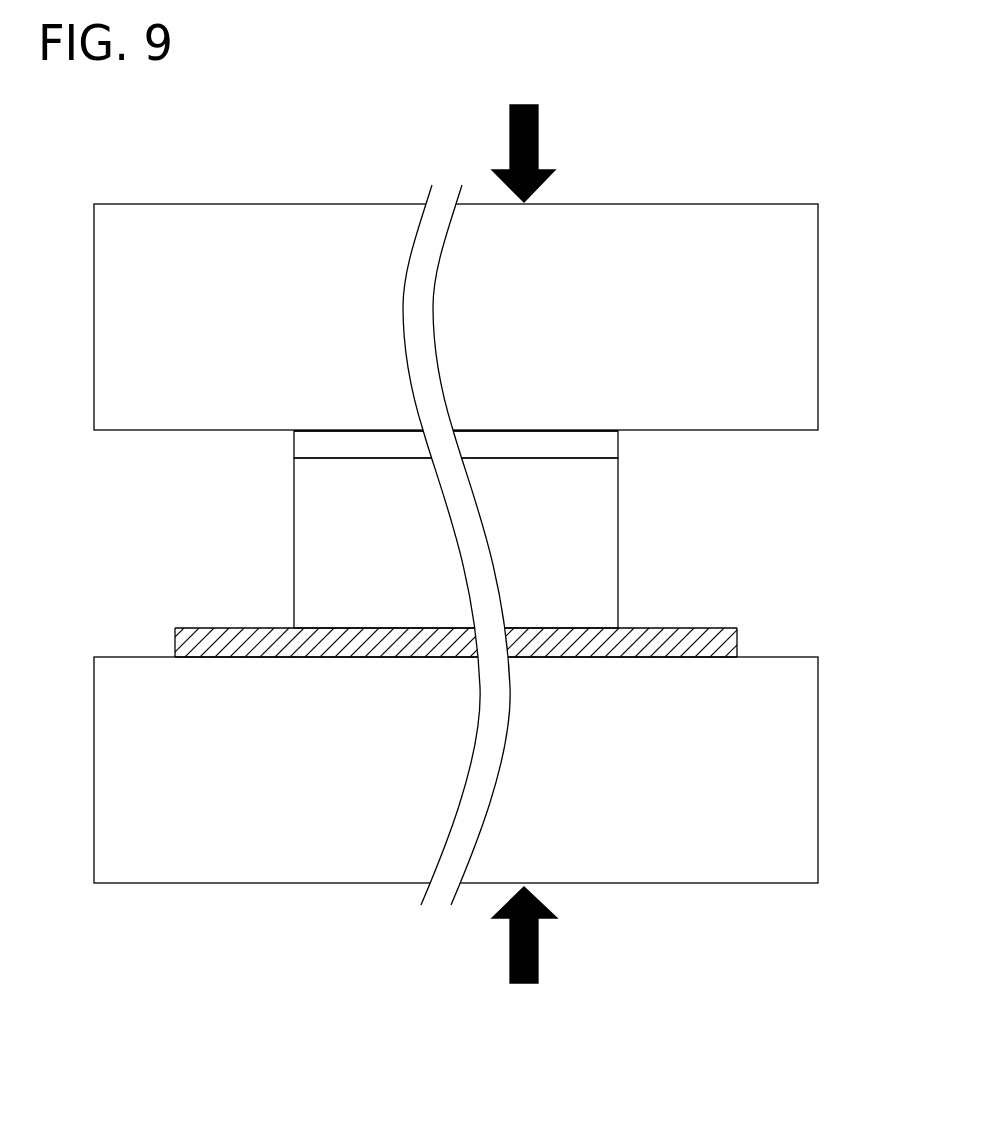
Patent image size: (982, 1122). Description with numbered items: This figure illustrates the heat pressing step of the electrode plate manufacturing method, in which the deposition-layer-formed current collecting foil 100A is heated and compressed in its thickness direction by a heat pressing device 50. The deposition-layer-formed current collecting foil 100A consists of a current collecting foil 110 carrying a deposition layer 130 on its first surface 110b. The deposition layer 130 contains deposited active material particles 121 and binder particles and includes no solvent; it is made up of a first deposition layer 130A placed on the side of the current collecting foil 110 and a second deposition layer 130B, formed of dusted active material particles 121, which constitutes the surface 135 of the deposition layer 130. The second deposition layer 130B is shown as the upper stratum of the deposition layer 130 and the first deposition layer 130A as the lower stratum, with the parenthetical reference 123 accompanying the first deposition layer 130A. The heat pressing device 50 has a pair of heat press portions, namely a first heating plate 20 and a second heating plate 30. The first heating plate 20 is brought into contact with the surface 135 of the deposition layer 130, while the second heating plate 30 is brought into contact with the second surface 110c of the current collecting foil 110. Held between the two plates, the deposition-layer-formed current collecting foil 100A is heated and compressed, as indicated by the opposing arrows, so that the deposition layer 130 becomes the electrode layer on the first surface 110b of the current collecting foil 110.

The heat pressing device 50 is at (645, 195).
The first heating plate 20 is at (599, 342).
The second heating plate 30 is at (599, 793).
The deposition-layer-formed current collecting foil 100A is at (264, 552).
The surface of the deposition layer 135 is at (312, 430).
The deposition layer 130 is at (585, 529).
The second deposition layer 130B is at (549, 469).
The active material particles 121 is at (608, 447).
The first deposition layer 130A is at (549, 543).
The lower layer (alternate) 123 is at (795, 442).
The current collecting foil 110 is at (522, 650).
The first surface of the current collecting foil 110b is at (683, 628).
The second surface of the current collecting foil 110c is at (700, 657).